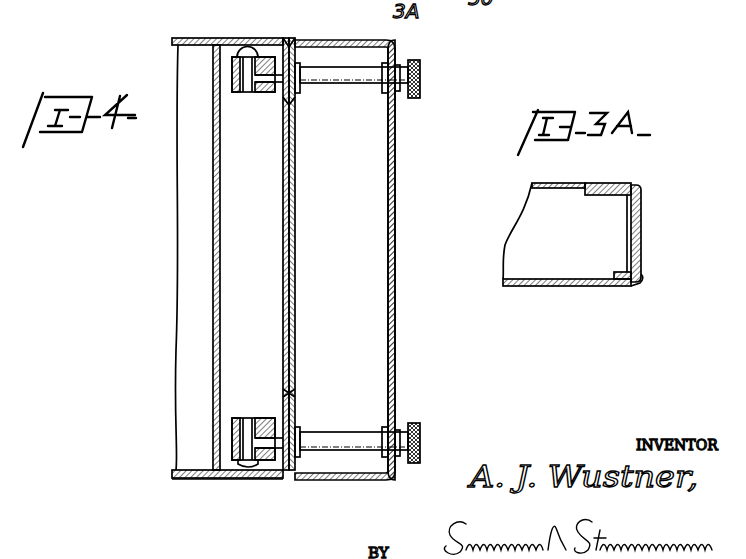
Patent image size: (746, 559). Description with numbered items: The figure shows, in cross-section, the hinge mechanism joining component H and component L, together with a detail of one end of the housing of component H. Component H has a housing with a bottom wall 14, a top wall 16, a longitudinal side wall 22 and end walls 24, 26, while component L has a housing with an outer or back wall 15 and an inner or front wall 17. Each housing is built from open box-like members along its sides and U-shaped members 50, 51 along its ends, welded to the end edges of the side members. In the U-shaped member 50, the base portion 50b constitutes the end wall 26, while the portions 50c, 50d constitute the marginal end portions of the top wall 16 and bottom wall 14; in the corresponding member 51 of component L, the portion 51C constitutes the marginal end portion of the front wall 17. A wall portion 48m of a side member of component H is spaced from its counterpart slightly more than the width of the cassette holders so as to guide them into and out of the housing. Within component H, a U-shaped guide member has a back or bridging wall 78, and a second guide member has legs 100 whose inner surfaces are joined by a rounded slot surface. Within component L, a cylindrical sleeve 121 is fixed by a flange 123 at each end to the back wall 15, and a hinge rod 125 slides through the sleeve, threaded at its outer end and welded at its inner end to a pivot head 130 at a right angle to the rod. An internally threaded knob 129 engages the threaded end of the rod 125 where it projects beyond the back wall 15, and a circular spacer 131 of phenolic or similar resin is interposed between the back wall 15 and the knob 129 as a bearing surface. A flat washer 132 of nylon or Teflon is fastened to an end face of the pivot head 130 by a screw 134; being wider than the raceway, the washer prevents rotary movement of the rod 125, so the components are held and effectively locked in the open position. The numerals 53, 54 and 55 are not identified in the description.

In FIG. 4, the bottom wall 14 is at (180, 290).
In FIG. 3A, the bottom wall 14 is at (542, 290).
In FIG. 4, the outer or back wall 15 is at (397, 180).
In FIG. 3A, the top wall 16 is at (604, 182).
In FIG. 4, the inner or front wall 17 is at (297, 213).
In FIG. 4, the side wall 22 is at (282, 240).
In FIG. 4, the end wall 24 is at (186, 36).
In FIG. 4, the end wall 26 is at (160, 512).
In FIG. 3A, the end wall 26 is at (642, 284).
In FIG. 4, the wall portion 48m is at (212, 160).
In FIG. 4, the U-shaped member 50 is at (228, 34).
In FIG. 3A, the U-shaped member 50 is at (628, 200).
In FIG. 3A, the base portion 50b is at (626, 240).
In FIG. 3A, the portion 50c is at (636, 190).
In FIG. 3A, the portion 50d is at (628, 287).
In FIG. 4, the U-shaped member 51 is at (341, 42).
In FIG. 4, the portion 51C is at (497, 35).
In FIG. 4, the member 53 is at (602, 8).
In FIG. 4, the member 54 is at (442, 18).
In FIG. 4, the member 55 is at (540, 7).
In FIG. 4, the back or bridging wall 78 is at (232, 70).
In FIG. 4, the legs 100 is at (266, 82).
In FIG. 4, the cylindrical sleeve 121 is at (327, 86).
In FIG. 4, the flange 123 is at (386, 92).
In FIG. 4, the hinge rod 125 is at (242, 60).
In FIG. 4, the knob 129 is at (421, 72).
In FIG. 4, the pivot head 130 is at (246, 93).
In FIG. 4, the circular spacer 131 is at (396, 66).
In FIG. 4, the flat washer 132 is at (250, 470).
In FIG. 4, the screw 134 is at (270, 470).
In FIG. 4, the component H is at (176, 236).
In FIG. 3A, the component H is at (510, 234).
In FIG. 4, the component L is at (398, 228).